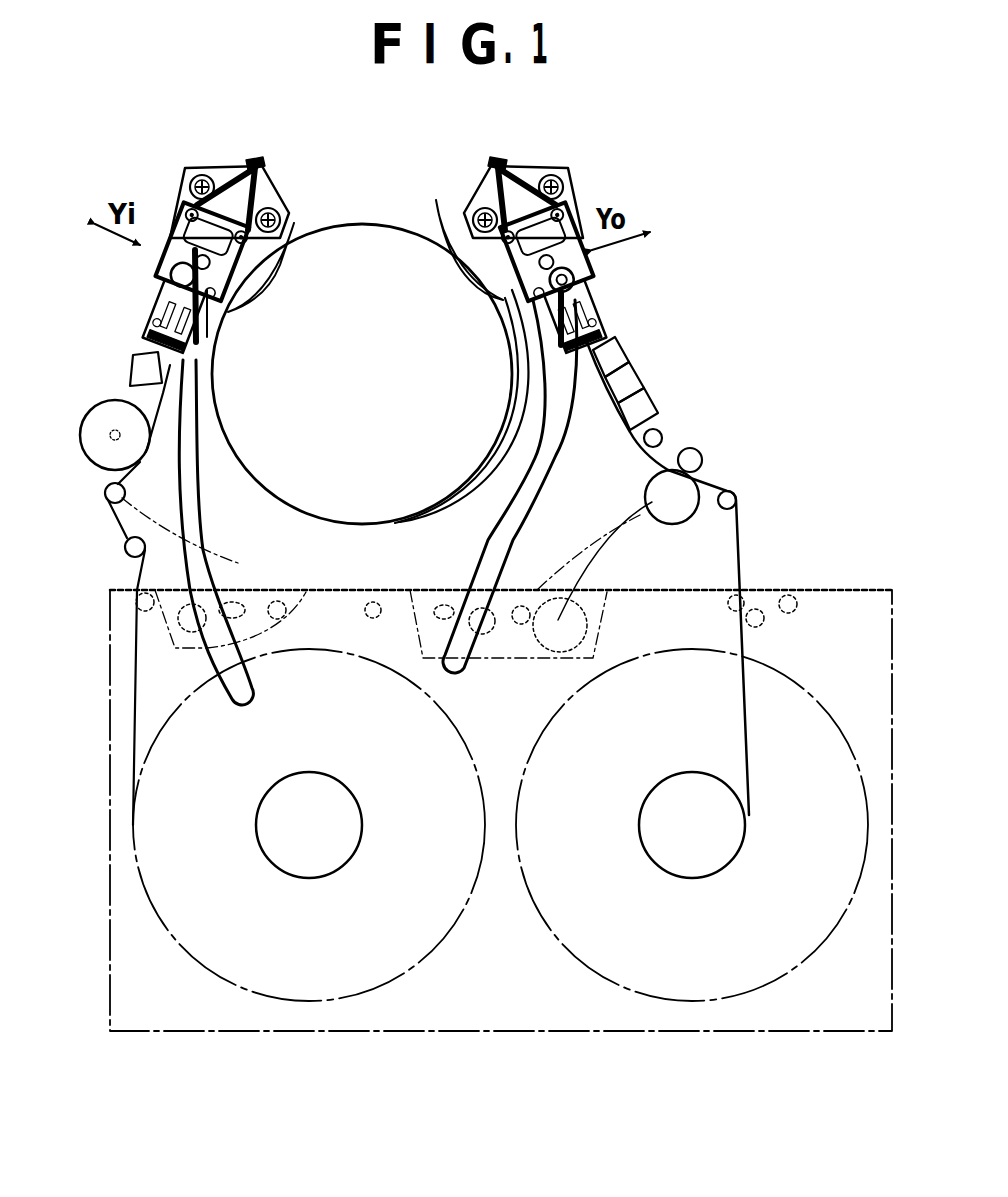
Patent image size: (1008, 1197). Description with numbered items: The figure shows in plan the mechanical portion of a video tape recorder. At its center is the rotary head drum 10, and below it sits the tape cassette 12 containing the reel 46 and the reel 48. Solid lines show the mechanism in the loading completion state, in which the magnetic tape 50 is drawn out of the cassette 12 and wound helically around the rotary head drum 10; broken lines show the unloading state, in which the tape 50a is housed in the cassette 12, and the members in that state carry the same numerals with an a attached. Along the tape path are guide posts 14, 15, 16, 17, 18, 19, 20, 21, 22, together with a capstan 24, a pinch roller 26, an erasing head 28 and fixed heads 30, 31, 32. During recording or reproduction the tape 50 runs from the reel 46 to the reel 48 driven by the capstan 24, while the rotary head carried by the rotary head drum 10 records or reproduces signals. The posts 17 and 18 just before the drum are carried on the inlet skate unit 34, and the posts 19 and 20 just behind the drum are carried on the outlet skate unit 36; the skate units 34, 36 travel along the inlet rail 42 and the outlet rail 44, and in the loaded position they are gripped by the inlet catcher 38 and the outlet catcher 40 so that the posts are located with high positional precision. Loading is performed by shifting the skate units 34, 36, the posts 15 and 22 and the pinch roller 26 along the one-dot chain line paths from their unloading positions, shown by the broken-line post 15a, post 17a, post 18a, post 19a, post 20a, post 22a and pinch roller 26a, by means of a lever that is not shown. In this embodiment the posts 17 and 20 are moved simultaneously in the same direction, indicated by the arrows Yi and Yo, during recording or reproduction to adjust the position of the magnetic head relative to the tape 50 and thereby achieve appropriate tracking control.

The rotary head drum 10 is at (358, 230).
The tape cassette 12 is at (112, 738).
The guide post 14 is at (125, 548).
The guide post 15 is at (105, 493).
The guide post 16 is at (80, 435).
The guide post 17 is at (170, 274).
The guide post 18 is at (294, 235).
The guide post 19 is at (436, 200).
The guide post 20 is at (580, 275).
The guide post 21 is at (663, 433).
The guide post 22 is at (738, 496).
The capstan 24 is at (703, 458).
The pinch roller 26 is at (676, 522).
The erasing head 28 is at (133, 362).
The fixed head 30 is at (620, 350).
The fixed head 31 is at (634, 376).
The fixed head 32 is at (652, 400).
The inlet skate unit 34 is at (153, 322).
The outlet skate unit 36 is at (598, 325).
The inlet catcher 38 is at (178, 210).
The outlet catcher 40 is at (575, 192).
The inlet rail 42 is at (198, 500).
The outlet rail 44 is at (553, 480).
The reel 46 is at (240, 978).
The reel 48 is at (765, 970).
The magnetic tape 50 is at (745, 553).
The guide post (unloading state) 15a is at (368, 604).
The guide post (unloading state) 17a is at (148, 593).
The guide post (unloading state) 18a is at (275, 606).
The guide post (unloading state) 19a is at (443, 605).
The guide post (unloading state) 20a is at (483, 637).
The guide post (unloading state) 22a is at (523, 626).
The pinch roller (unloading state) 26a is at (588, 622).
The magnetic tape (unloading state) 50a is at (737, 620).